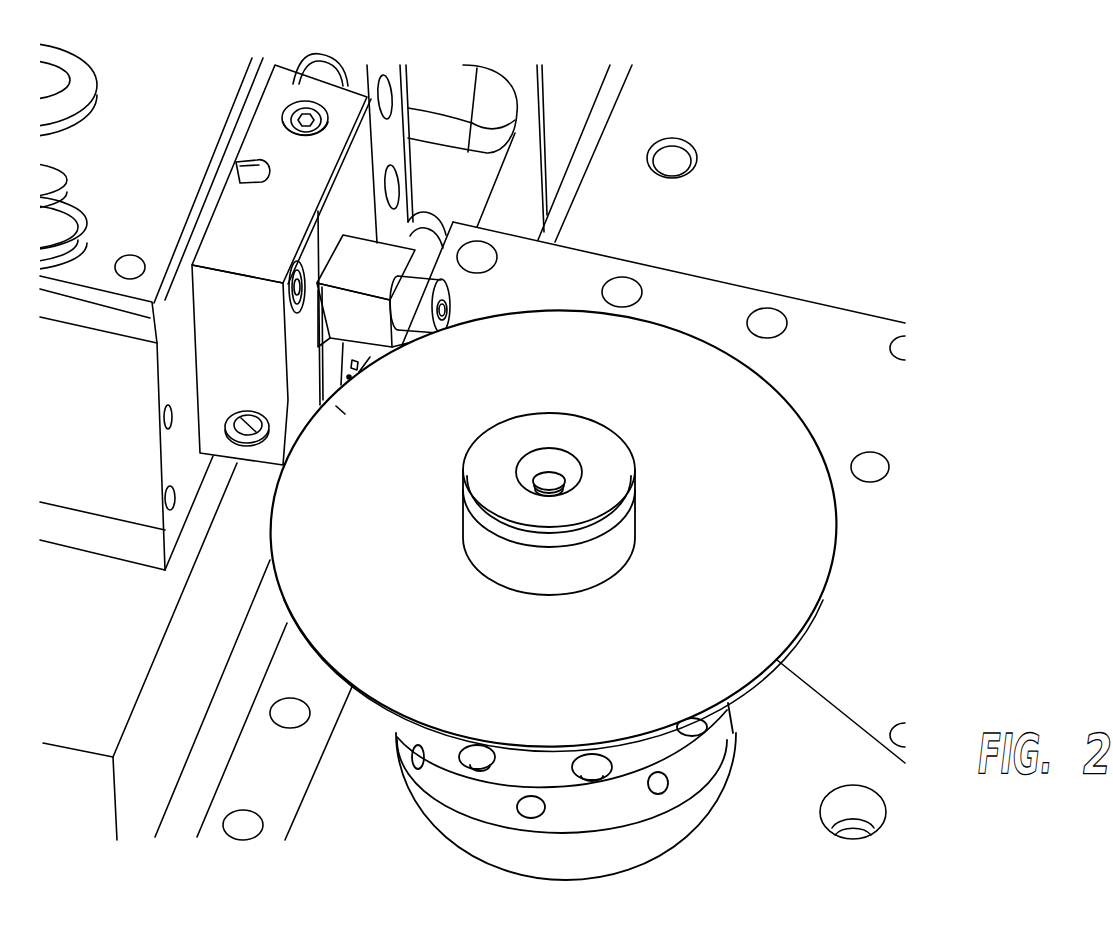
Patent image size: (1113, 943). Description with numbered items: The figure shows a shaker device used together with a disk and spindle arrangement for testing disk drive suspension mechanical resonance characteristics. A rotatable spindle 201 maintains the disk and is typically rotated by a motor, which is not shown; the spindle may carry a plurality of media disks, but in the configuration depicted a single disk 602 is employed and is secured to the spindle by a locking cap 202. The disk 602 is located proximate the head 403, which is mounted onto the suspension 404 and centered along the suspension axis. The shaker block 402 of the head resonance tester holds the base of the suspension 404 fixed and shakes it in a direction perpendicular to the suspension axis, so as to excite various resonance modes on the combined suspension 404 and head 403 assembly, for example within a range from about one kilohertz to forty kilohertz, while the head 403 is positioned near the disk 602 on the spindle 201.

The rotatable spindle 201 is at (722, 750).
The locking cap 202 is at (640, 446).
The shaker block 402 is at (370, 290).
The head 403 is at (351, 415).
The suspension 404 is at (366, 369).
The disk 602 is at (437, 700).